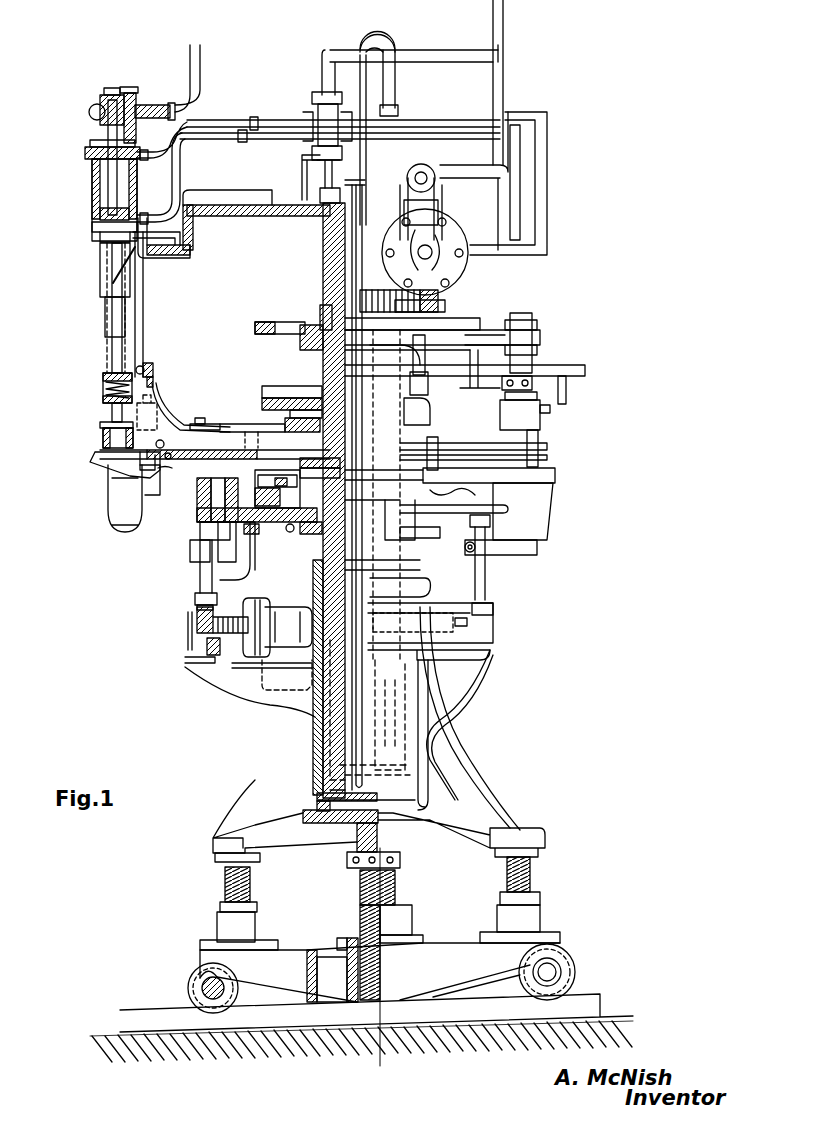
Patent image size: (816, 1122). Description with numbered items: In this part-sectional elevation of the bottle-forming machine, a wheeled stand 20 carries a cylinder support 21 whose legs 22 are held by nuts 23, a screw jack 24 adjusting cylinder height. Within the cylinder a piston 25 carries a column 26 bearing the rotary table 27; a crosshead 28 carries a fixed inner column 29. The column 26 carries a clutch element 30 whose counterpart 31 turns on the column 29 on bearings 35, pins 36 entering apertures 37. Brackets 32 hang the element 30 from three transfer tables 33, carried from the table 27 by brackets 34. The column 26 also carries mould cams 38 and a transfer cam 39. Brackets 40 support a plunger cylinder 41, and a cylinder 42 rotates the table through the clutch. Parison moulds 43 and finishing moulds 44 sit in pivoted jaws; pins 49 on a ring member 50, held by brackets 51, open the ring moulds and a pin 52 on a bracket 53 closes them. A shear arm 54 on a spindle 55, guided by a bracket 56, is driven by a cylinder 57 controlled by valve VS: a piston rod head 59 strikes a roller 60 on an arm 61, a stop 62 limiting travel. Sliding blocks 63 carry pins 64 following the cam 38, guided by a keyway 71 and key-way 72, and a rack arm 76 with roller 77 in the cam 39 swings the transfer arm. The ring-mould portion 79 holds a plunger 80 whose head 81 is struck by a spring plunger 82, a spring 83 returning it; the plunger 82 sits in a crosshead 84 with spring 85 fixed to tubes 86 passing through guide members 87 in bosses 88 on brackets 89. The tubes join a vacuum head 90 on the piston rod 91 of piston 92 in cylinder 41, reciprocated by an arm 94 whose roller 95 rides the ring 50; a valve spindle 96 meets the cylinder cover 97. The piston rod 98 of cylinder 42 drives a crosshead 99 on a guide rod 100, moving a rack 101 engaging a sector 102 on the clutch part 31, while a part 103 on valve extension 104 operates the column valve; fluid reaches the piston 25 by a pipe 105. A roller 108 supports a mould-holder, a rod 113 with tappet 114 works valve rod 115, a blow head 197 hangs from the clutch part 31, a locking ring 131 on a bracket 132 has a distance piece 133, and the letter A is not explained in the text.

The truck or wheeled stand 20 is at (440, 955).
The central cylinder support 21 is at (400, 770).
The legs 22 is at (233, 824).
The nuts 23 is at (230, 905).
The central screw jack device 24 is at (358, 892).
The piston element 25 is at (312, 745).
The column 26 is at (292, 548).
The transverse mould or machine table 27 is at (215, 530).
The crosshead 28 is at (375, 583).
The rigid inner column member 29 is at (305, 585).
The clutch element 30 is at (320, 405).
The clutch element 31 is at (258, 326).
The brackets 32 is at (285, 398).
The transfer tables 33 is at (225, 478).
The brackets 34 is at (245, 490).
The bearing members 35 is at (315, 335).
The pins 36 is at (422, 380).
The apertures 37 is at (425, 347).
The mould opening and closing cams 38 is at (281, 489).
The transfer cam 39 is at (292, 410).
The bracket members 40 is at (200, 240).
The glass plunger cylinder 41 is at (96, 197).
The cylinder and piston 42 is at (455, 243).
The parison moulds 43 is at (115, 515).
The finishing moulds 44 is at (540, 520).
The pins 49 is at (566, 392).
The ring member 50 is at (577, 368).
The brackets 51 is at (162, 392).
The pin 52 is at (505, 390).
The bracket 53 is at (530, 350).
The shear arm or wiper 54 is at (235, 585).
The vertical spindle 55 is at (200, 603).
The bracket 56 is at (205, 583).
The cylinder 57 is at (285, 623).
The piston rod head 59 is at (197, 626).
The roller 60 is at (218, 640).
The arm 61 is at (210, 650).
The stop 62 is at (205, 640).
The radial sliding blocks 63 is at (240, 528).
The roller or pin 64 is at (320, 478).
The keyway 71 is at (279, 544).
The key and key-way 72 is at (267, 497).
The rack arm 76 is at (205, 425).
The roller or pin 77 is at (265, 428).
The upper portion of the ring mould 79 is at (140, 458).
The plunger 80 is at (83, 444).
The cap or head 81 is at (108, 423).
The spring plunger 82 is at (108, 400).
The spring 83 is at (104, 441).
The crosshead 84 is at (103, 387).
The spring 85 is at (105, 374).
The tubular members 86 is at (108, 338).
The guide members 87 is at (112, 300).
The bosses 88 is at (100, 258).
The bracket members 89 is at (162, 245).
The vacuum head 90 is at (108, 95).
The piston rod 91 is at (112, 167).
The piston 92 is at (105, 212).
The arm 94 is at (143, 310).
The roller 95 is at (150, 372).
The spindle 96 is at (97, 115).
The cylinder cover 97 is at (90, 153).
The piston rod 98 is at (425, 296).
The crosshead 99 is at (428, 252).
The guide rod 100 is at (440, 212).
The rack 101 is at (440, 318).
The sector 102 is at (480, 336).
The part 103 is at (432, 182).
The extension 104 is at (432, 175).
The pipe 105 is at (388, 90).
The supporting rollers 108 is at (150, 460).
The rod 113 is at (345, 275).
The tappet 114 is at (330, 203).
The rod 115 is at (305, 175).
The locking ring 131 is at (470, 605).
The bracket 132 is at (452, 670).
The distance piece 133 is at (495, 615).
The blow head 197 is at (528, 408).
The table A is at (150, 449).
The valve V.S. VS is at (305, 687).